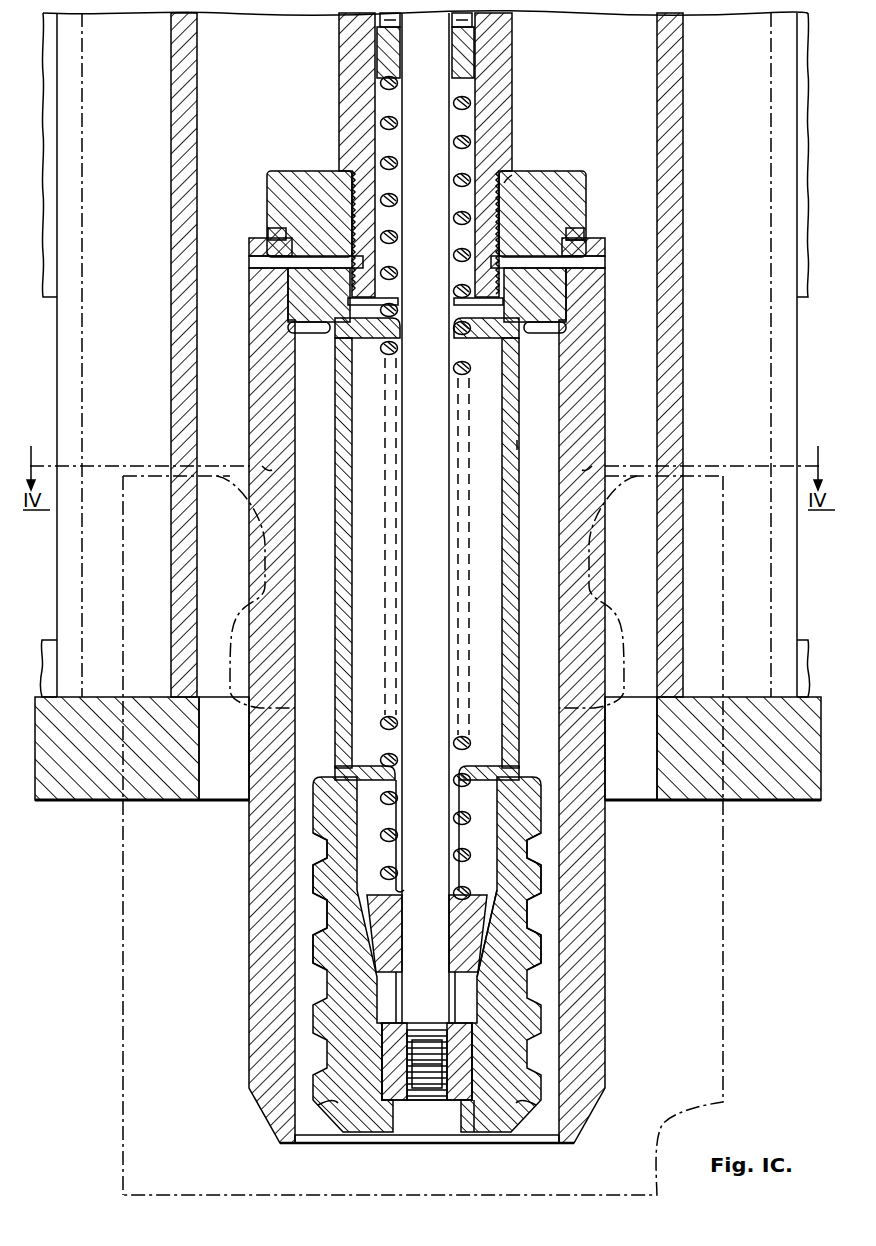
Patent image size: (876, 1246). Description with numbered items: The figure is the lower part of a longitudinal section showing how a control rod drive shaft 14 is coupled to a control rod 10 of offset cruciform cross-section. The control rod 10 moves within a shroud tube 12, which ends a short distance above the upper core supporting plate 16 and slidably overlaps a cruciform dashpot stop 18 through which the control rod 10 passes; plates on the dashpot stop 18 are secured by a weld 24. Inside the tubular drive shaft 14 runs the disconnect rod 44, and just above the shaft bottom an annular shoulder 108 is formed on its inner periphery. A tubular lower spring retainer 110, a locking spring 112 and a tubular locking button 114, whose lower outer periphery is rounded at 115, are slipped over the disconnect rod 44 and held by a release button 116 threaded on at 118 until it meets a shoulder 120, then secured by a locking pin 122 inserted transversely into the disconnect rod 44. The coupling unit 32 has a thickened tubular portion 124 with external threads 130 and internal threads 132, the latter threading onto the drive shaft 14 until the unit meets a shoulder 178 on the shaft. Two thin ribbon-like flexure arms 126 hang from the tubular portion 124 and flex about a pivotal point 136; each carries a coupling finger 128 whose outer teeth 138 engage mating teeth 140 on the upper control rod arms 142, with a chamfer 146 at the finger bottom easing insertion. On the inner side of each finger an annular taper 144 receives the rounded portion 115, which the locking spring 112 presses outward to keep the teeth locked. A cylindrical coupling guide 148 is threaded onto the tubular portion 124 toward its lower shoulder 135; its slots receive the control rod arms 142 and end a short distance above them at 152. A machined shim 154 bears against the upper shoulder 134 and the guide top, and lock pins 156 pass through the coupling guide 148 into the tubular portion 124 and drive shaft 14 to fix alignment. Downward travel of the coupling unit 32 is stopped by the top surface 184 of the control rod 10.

The control rod 10 is at (528, 1184).
The shroud tube 12 is at (48, 38).
The control rod drive shaft 14 is at (512, 74).
The upper core supporting plate 16 is at (165, 800).
The dashpot stop 18 is at (62, 346).
The weld 24 is at (56, 640).
The coupling unit 32 is at (553, 451).
The disconnect rod 44 is at (430, 103).
The annular shoulder 108 is at (462, 22).
The lower spring retainer 110 is at (380, 44).
The locking spring 112 is at (466, 152).
The locking button 114 is at (472, 912).
The rounded portion 115 is at (500, 960).
The release button 116 is at (474, 1102).
The threads 118 is at (440, 1100).
The shoulder 120 is at (448, 1024).
The locking pin 122 is at (420, 1062).
The tubular portion 124 is at (578, 192).
The flexure arms 126 is at (342, 405).
The coupling fingers 128 is at (320, 818).
The external threads 130 is at (565, 298).
The internal threads 132 is at (500, 190).
The upper shoulder 134 is at (580, 232).
The lower shoulder 135 is at (276, 236).
The pivotal point 136 is at (341, 339).
The teeth 138 is at (318, 921).
The mating teeth 140 is at (530, 858).
The upper control rod arms 142 is at (218, 480).
The annular taper 144 is at (398, 890).
The chamfer 146 is at (322, 1133).
The coupling guide 148 is at (262, 300).
The slot upper end 152 is at (268, 468).
The machined shim 154 is at (586, 240).
The lock pin 156 is at (270, 263).
The shoulder 178 is at (515, 180).
The top surface 184 is at (398, 1144).